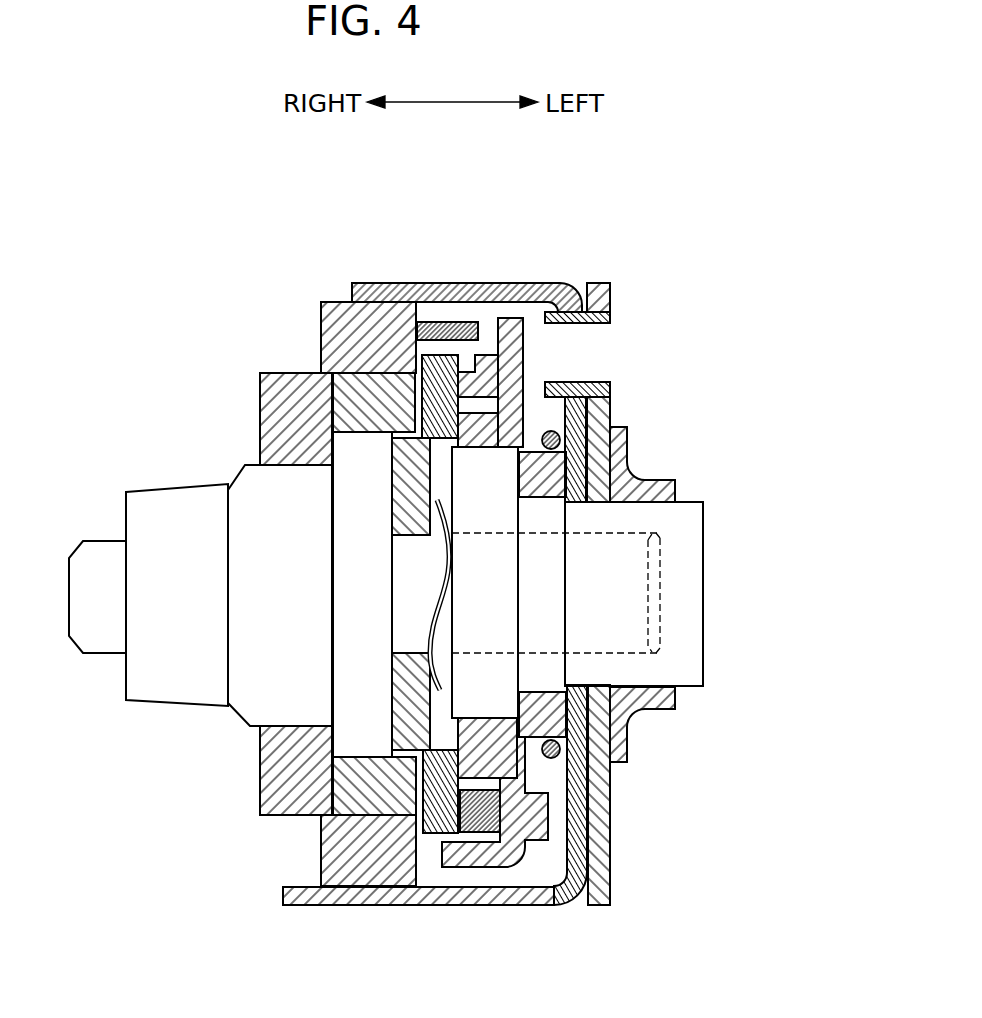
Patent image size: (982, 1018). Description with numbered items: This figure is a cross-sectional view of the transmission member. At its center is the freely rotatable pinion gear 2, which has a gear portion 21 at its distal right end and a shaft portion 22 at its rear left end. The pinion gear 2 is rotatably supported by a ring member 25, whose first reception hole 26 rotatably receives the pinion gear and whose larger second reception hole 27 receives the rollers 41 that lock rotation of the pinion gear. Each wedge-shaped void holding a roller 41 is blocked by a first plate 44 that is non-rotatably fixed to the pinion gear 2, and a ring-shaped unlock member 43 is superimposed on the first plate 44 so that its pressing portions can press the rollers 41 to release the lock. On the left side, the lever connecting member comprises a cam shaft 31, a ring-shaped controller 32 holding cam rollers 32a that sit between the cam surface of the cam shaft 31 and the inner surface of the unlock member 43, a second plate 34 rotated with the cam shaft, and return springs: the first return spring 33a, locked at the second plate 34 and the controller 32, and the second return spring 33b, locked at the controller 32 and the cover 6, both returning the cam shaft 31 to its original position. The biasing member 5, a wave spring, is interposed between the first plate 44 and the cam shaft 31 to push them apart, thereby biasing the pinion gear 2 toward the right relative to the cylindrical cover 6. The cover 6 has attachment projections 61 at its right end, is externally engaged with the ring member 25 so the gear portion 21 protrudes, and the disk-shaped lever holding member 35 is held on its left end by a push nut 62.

The pinion gear 2 is at (243, 468).
The gear portion 21 is at (167, 482).
The shaft portion 22 is at (418, 576).
The ring member 25 is at (262, 752).
The first reception hole 26 is at (260, 460).
The second reception hole 27 is at (323, 373).
The cam shaft 31 is at (703, 516).
The controller 32 is at (538, 828).
The cam roller 32a is at (480, 818).
The first return spring 33a is at (553, 757).
The second return spring 33b is at (438, 321).
The second plate 34 is at (585, 447).
The lever holding member 35 is at (610, 297).
The roller 41 is at (360, 393).
The unlock member 43 is at (490, 380).
The first plate 44 is at (405, 447).
The biasing member 5 is at (438, 631).
The cover 6 is at (510, 282).
The attachment projection 61 is at (302, 907).
The push nut 62 is at (630, 456).